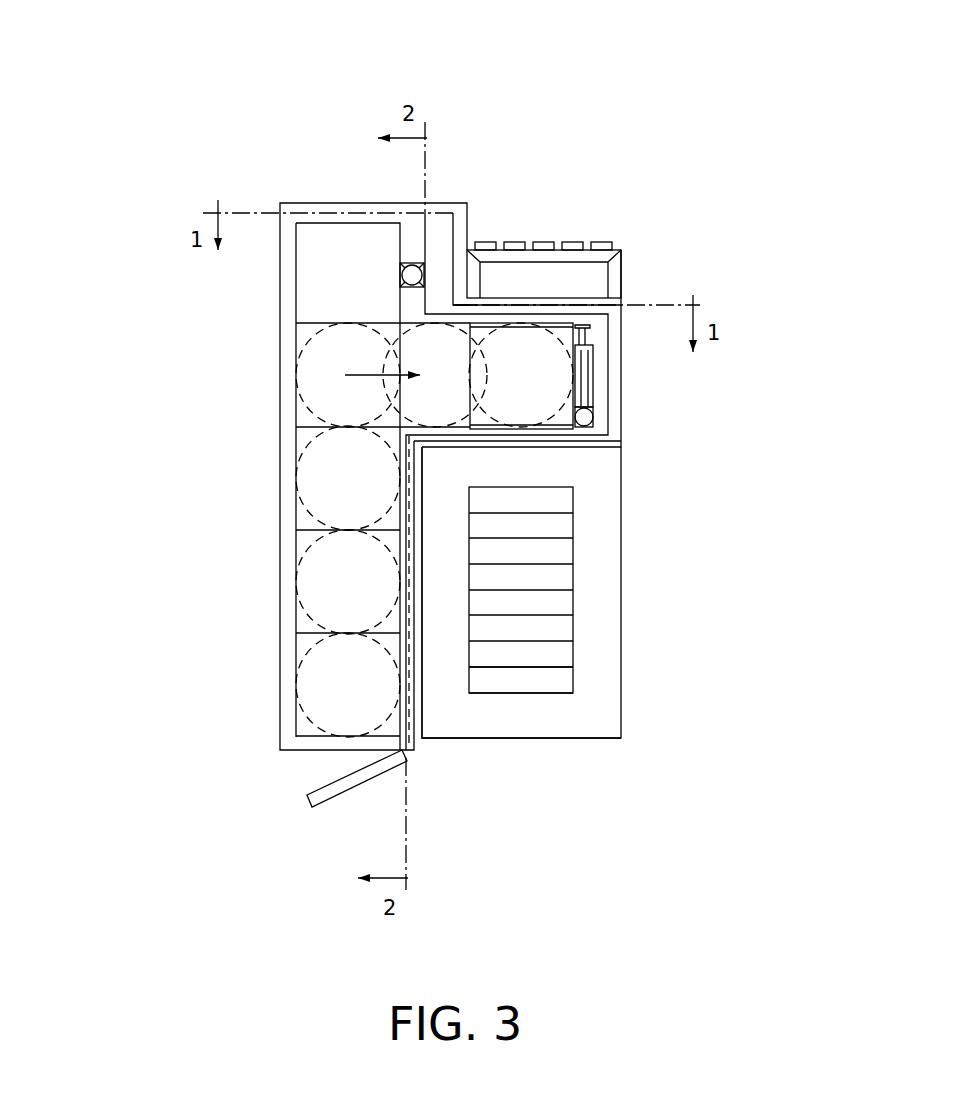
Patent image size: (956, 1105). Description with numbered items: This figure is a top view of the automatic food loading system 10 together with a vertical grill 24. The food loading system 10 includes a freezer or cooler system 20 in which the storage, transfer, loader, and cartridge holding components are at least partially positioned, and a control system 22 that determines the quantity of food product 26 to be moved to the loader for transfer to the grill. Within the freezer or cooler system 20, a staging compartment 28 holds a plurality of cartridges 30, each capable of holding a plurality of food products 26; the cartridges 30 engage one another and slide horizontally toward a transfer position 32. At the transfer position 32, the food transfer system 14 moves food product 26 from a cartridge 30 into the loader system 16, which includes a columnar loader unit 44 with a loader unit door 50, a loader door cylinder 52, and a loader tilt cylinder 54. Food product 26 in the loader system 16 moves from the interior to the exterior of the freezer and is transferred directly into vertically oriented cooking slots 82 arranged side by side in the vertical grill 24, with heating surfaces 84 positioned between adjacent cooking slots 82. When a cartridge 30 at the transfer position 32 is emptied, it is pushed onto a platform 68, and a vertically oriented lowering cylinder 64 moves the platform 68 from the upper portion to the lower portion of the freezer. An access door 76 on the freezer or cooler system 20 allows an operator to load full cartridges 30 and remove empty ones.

The food loading system 10 is at (292, 142).
The food transfer system 14 is at (476, 464).
The loader system 16 is at (552, 306).
The freezer or cooler system 20 is at (274, 550).
The control system 22 is at (617, 270).
The vertical grill 24 is at (622, 720).
The food product 26 is at (302, 521).
The staging compartment 28 is at (297, 437).
The cartridge 30 is at (303, 628).
The transfer position 32 is at (296, 335).
The loader unit 44 is at (590, 330).
The loader unit door 50 is at (555, 429).
The loader door cylinder 52 is at (595, 418).
The loader tilt cylinder 54 is at (584, 378).
The lowering cylinder 64 is at (410, 262).
The platform 68 is at (322, 283).
The access door 76 is at (374, 773).
The cooking slot 82 is at (562, 628).
The heating surface 84 is at (543, 641).